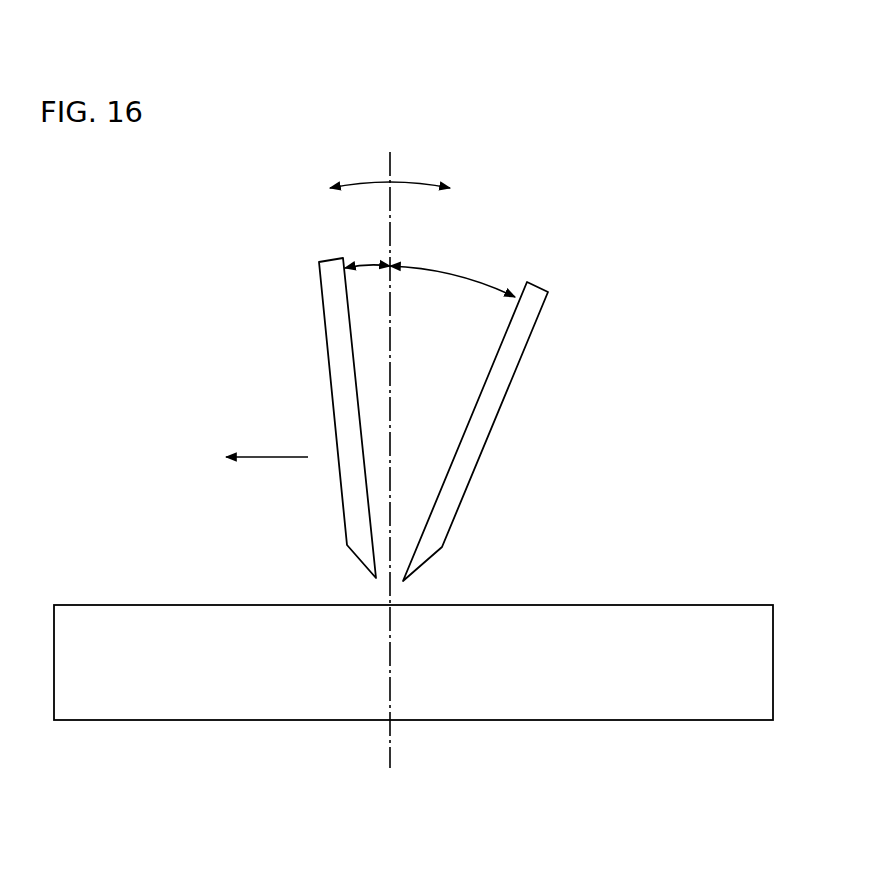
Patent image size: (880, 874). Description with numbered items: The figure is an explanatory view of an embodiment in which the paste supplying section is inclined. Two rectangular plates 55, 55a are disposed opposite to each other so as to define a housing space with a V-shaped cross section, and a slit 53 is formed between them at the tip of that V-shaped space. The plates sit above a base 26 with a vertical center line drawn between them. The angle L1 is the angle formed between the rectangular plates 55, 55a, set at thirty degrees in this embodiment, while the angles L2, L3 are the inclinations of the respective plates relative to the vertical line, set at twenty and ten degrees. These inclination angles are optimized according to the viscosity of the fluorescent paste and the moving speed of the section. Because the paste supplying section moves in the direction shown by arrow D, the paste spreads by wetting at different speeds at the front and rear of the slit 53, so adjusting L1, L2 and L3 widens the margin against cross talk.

The work table / bed plate 26 is at (658, 615).
The rectangular plate 55a is at (337, 338).
The rectangular plate 55 is at (513, 335).
The slit 53 is at (382, 583).
The angle formed between the rectangular plates L1 is at (410, 182).
The angle of inclination of rectangular plate relative to the vertical line L2 is at (462, 272).
The angle of inclination of rectangular plate relative to the vertical line L3 is at (365, 263).
The moving direction of the paste supplying section D is at (255, 457).